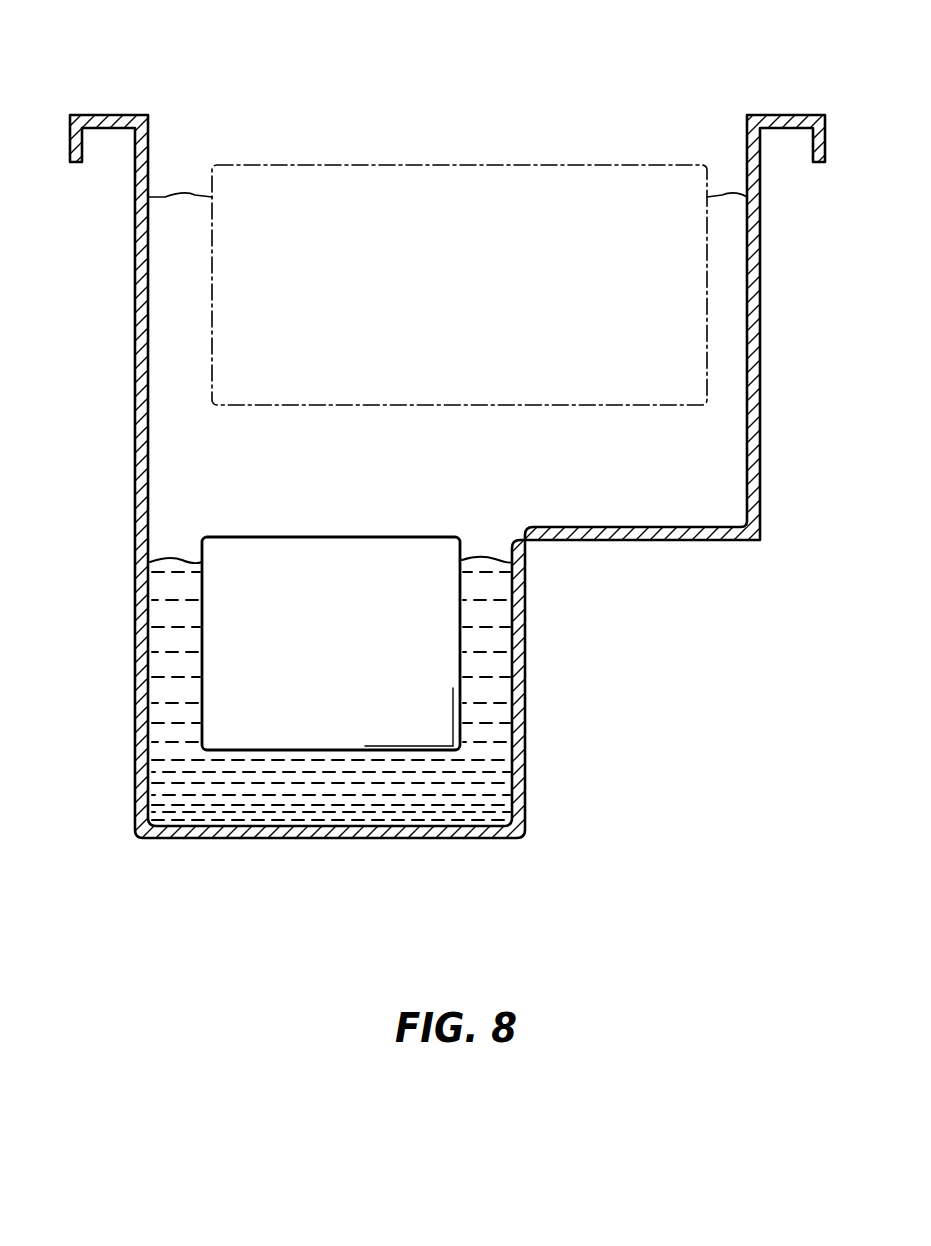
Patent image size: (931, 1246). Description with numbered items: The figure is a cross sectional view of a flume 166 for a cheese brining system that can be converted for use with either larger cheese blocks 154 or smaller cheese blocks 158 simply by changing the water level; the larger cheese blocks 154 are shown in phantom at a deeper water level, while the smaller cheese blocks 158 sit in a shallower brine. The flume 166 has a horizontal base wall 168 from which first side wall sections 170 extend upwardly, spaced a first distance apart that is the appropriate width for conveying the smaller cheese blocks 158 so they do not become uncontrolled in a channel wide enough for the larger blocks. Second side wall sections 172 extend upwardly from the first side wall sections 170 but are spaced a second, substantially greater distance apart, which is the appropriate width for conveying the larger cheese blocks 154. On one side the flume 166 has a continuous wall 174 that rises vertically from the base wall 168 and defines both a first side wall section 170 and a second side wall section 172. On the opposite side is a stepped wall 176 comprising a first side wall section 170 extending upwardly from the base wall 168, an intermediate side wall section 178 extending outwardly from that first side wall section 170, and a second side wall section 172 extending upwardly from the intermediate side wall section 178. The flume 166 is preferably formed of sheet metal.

The flume 166 is at (649, 99).
The larger cheese blocks 154 is at (483, 304).
The smaller cheese blocks 158 is at (349, 665).
The second side wall sections 172 is at (136, 362).
The continuous wall 174 is at (136, 505).
The first side wall sections 170 is at (136, 722).
The horizontal base wall 168 is at (375, 840).
The stepped wall 176 is at (660, 541).
The intermediate side wall section 178 is at (565, 541).